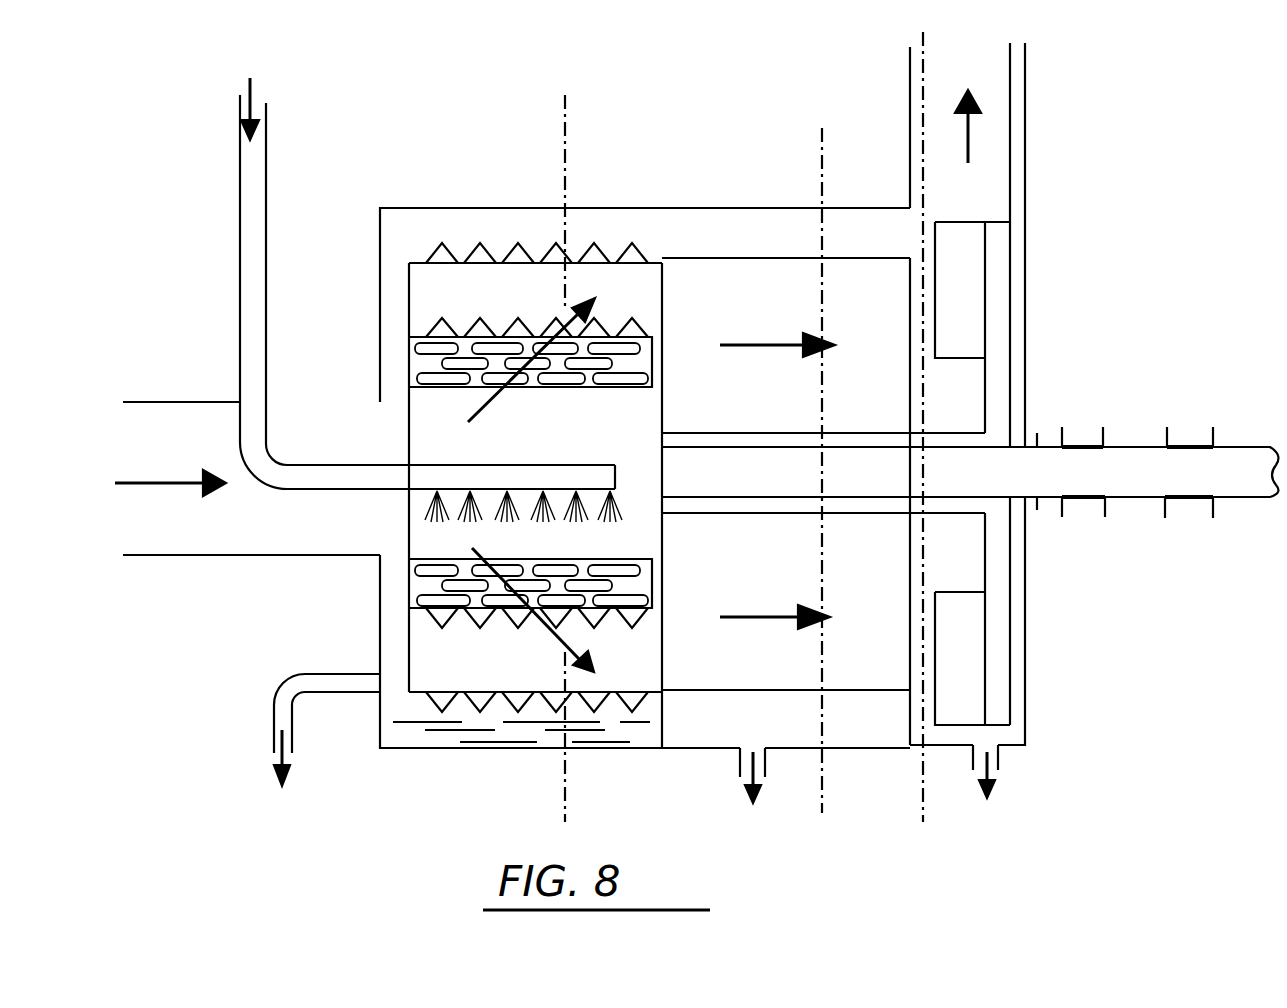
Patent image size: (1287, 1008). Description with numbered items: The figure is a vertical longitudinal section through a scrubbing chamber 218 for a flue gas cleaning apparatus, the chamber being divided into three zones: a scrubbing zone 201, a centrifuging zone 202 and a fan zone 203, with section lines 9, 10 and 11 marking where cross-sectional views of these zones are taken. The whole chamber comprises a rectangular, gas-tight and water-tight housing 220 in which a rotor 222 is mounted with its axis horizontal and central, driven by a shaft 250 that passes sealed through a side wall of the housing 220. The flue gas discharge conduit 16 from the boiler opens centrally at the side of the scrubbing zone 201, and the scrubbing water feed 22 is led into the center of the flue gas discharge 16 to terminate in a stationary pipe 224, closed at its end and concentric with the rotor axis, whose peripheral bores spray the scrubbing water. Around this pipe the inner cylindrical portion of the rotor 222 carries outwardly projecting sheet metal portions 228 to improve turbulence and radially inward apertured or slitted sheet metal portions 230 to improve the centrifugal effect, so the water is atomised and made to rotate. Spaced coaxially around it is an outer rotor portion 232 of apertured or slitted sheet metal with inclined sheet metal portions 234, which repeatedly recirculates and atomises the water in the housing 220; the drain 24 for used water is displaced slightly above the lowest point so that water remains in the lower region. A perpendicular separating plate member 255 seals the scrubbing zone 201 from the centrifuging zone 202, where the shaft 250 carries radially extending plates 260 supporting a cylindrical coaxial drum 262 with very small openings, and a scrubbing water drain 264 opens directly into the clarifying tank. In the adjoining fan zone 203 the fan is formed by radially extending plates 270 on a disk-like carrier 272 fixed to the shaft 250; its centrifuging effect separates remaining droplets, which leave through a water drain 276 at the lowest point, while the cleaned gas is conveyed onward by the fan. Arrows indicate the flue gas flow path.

The flue gas discharge conduit 16 is at (193, 401).
The scrubbing water feed 22 is at (247, 263).
The drain 24 is at (273, 722).
The scrubbing zone 201 is at (508, 206).
The centrifuging zone 202 is at (690, 205).
The fan zone 203 is at (1032, 225).
The scrubbing chamber 218 is at (1040, 646).
The rectangular housing 220 is at (652, 752).
The rotor 222 is at (850, 256).
The stationary pipe 224 is at (473, 472).
The sheet metal portions 228 is at (428, 623).
The sheet metal portions 230 is at (433, 575).
The outer rotor portion 232 is at (610, 253).
The sheet metal portions 234 is at (463, 693).
The shaft 250 is at (1093, 475).
The separating plate member 255 is at (665, 717).
The radially extending plates 260 is at (833, 640).
The cylindrical coaxial drum 262 is at (853, 690).
The scrubbing water drain 264 is at (738, 777).
The radially extending plates 270 is at (960, 645).
The disk-like carrier 272 is at (995, 550).
The water drain 276 is at (1003, 752).
The section line 9- 9 is at (548, 104).
The section line 10- 10 is at (805, 137).
The section line 11- 11 is at (906, 41).